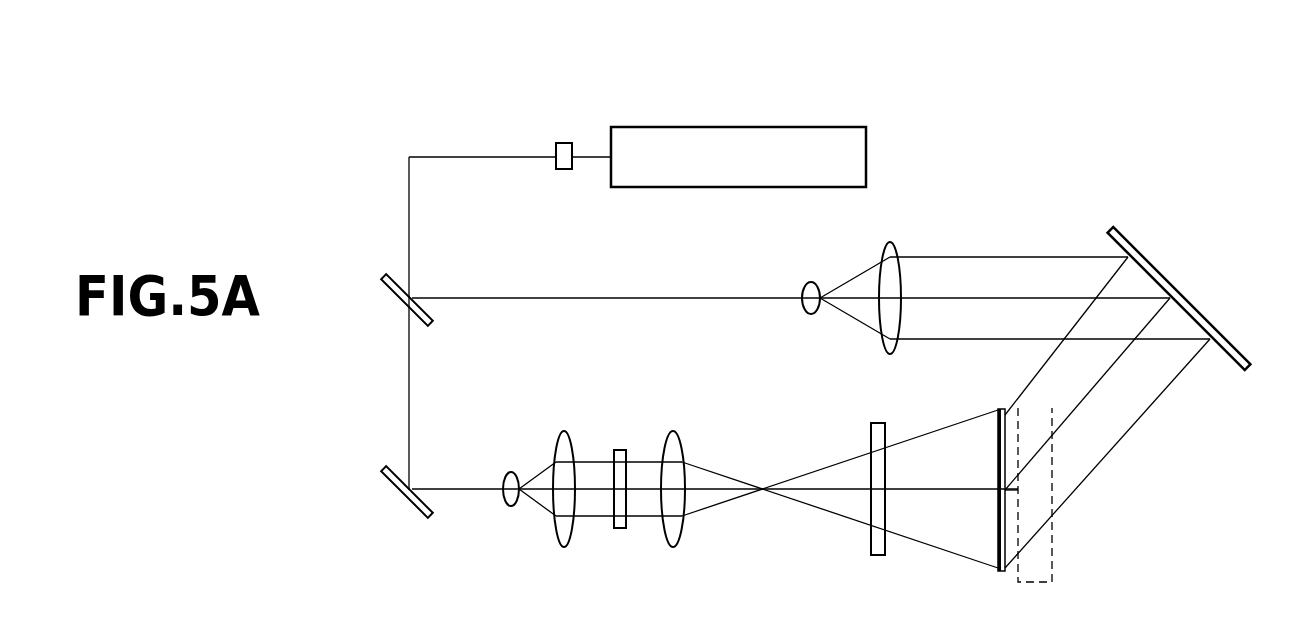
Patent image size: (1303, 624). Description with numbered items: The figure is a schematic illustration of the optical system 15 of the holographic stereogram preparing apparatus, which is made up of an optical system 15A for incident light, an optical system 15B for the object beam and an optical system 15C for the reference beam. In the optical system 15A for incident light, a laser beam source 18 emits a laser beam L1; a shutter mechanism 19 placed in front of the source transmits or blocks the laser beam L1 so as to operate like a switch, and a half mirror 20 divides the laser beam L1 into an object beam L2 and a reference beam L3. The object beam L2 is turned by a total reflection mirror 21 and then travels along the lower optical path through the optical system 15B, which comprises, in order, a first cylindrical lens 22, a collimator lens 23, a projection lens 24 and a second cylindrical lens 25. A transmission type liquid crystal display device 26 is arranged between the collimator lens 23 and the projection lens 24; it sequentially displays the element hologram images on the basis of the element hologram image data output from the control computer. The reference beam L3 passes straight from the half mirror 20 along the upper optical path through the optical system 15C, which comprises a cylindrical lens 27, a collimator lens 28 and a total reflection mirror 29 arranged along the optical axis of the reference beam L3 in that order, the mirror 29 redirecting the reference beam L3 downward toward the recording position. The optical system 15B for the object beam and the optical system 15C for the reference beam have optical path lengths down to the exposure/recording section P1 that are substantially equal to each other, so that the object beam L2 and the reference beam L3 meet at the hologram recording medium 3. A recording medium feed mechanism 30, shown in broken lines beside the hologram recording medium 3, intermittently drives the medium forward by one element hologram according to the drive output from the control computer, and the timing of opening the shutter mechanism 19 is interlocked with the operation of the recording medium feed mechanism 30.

The optical system 15 is at (400, 142).
The optical system for incident light 15A is at (637, 143).
The optical system for the object beam 15B is at (747, 458).
The optical system for the reference beam 15C is at (1014, 218).
The laser beam source 18 is at (752, 127).
The shutter mechanism 19 is at (564, 170).
The half mirror 20 is at (397, 298).
The total reflection mirror 21 is at (395, 491).
The first cylindrical lens 22 is at (512, 476).
The collimator lens 23 is at (563, 430).
The projection lens 24 is at (673, 431).
The second cylindrical lens 25 is at (878, 423).
The transmission type liquid crystal display device 26 is at (618, 450).
The cylindrical lens 27 is at (812, 307).
The collimator lens 28 is at (888, 242).
The total reflection mirror 29 is at (1147, 260).
The recording medium feed mechanism 30 is at (1052, 563).
The hologram recording medium 3 is at (998, 455).
The exposure/recording section P1 is at (987, 520).
The laser beam L1 is at (595, 153).
The object beam L2 is at (410, 370).
The reference beam L3 is at (481, 297).